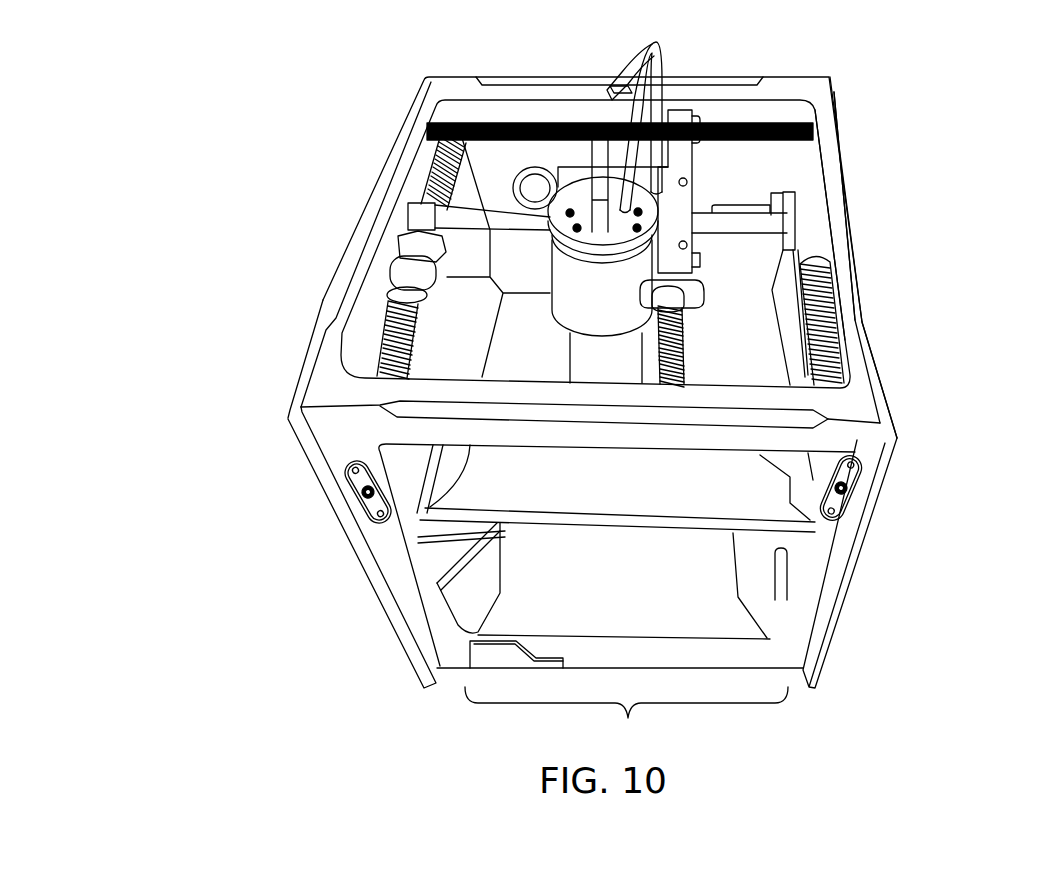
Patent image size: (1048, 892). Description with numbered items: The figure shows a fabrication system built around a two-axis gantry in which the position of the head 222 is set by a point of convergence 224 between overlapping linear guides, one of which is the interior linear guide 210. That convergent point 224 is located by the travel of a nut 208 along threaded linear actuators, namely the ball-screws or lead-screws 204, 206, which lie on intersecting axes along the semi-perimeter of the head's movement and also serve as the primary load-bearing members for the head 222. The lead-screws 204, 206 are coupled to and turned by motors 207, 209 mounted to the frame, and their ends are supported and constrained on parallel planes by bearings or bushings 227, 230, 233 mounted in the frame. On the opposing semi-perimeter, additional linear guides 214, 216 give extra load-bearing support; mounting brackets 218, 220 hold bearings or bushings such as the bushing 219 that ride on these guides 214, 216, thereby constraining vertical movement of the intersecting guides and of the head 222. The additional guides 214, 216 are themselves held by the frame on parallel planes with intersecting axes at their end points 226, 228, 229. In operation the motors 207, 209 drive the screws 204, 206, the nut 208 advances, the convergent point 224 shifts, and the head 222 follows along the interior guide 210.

The lead-screw 204 is at (393, 327).
The lead-screw 206 is at (490, 123).
The motor 207 is at (460, 125).
The nut 208 is at (697, 116).
The motor 209 is at (743, 180).
The linear guide 210 is at (527, 217).
The linear guide 214 is at (480, 347).
The linear guide 216 is at (805, 290).
The mounting bracket 218 is at (750, 226).
The bearing 219 is at (690, 362).
The mounting bracket 220 is at (690, 493).
The head 222 is at (590, 300).
The convergent point 224 is at (670, 213).
The end point 226 is at (293, 408).
The bearing 227 is at (373, 508).
The end point 228 is at (847, 500).
The end point 229 is at (893, 407).
The bearing 230 is at (840, 123).
The bearing 233 is at (418, 92).